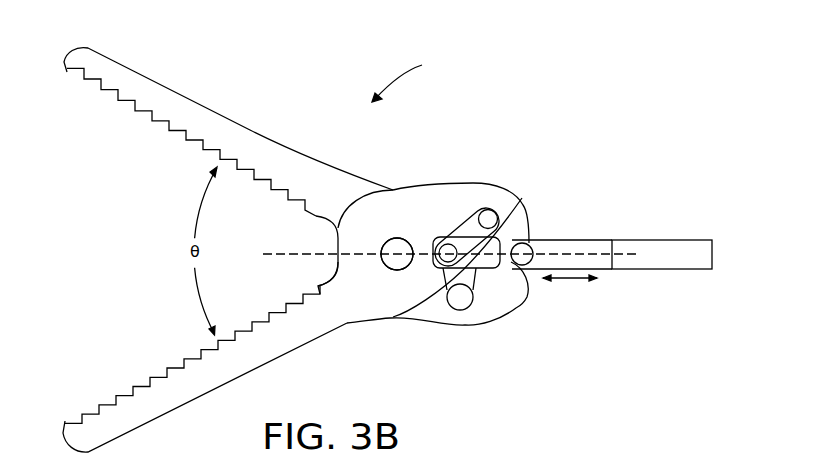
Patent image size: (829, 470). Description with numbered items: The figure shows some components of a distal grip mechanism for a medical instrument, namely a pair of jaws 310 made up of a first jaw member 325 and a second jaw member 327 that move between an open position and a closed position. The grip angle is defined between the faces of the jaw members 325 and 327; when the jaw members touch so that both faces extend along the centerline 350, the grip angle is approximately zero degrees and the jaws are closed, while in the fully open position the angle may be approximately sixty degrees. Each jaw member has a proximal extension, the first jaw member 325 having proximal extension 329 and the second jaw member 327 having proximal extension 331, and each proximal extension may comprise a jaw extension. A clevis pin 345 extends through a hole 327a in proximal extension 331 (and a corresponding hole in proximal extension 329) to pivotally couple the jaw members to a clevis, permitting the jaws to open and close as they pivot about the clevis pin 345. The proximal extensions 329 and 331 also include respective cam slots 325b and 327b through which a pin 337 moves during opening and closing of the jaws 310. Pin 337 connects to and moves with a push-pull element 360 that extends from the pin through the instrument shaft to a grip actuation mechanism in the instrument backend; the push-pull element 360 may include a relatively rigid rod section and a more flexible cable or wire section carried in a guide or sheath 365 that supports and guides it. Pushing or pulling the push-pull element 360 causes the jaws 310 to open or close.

The jaws 310 is at (412, 78).
The first jaw member 325 is at (180, 103).
The second jaw member 327 is at (127, 428).
The hole 327a is at (400, 234).
The cam slot 327b is at (492, 215).
The cam slot 325b is at (463, 308).
The proximal extension 331 is at (473, 183).
The proximal extension 329 is at (515, 308).
The pin 337 is at (500, 237).
The clevis pin 345 is at (397, 262).
The centerline 350 is at (336, 244).
The push-pull element 360 is at (572, 239).
The guide or sheath 365 is at (648, 239).